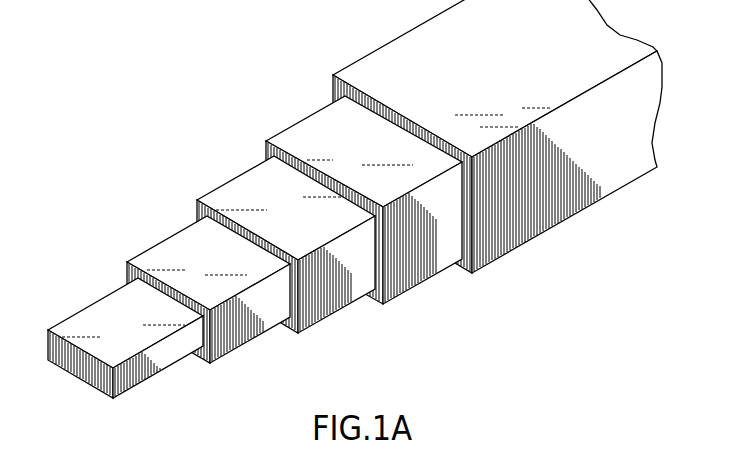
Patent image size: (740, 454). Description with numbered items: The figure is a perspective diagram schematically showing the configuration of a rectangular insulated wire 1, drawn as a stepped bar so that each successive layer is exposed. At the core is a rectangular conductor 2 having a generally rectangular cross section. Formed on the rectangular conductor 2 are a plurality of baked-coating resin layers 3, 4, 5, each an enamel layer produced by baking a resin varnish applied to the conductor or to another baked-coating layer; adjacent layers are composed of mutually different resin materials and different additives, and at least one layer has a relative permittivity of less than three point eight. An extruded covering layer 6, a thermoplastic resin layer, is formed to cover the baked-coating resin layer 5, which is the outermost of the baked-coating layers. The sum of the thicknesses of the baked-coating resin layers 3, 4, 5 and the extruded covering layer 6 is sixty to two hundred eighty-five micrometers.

The rectangular insulated wire 1 is at (352, 199).
The rectangular conductor 2 is at (105, 308).
The baked-coating resin layer 3 is at (173, 247).
The baked-coating resin layer 4 is at (253, 183).
The baked-coating resin layer 5 is at (308, 127).
The extruded covering layer 6 is at (472, 33).